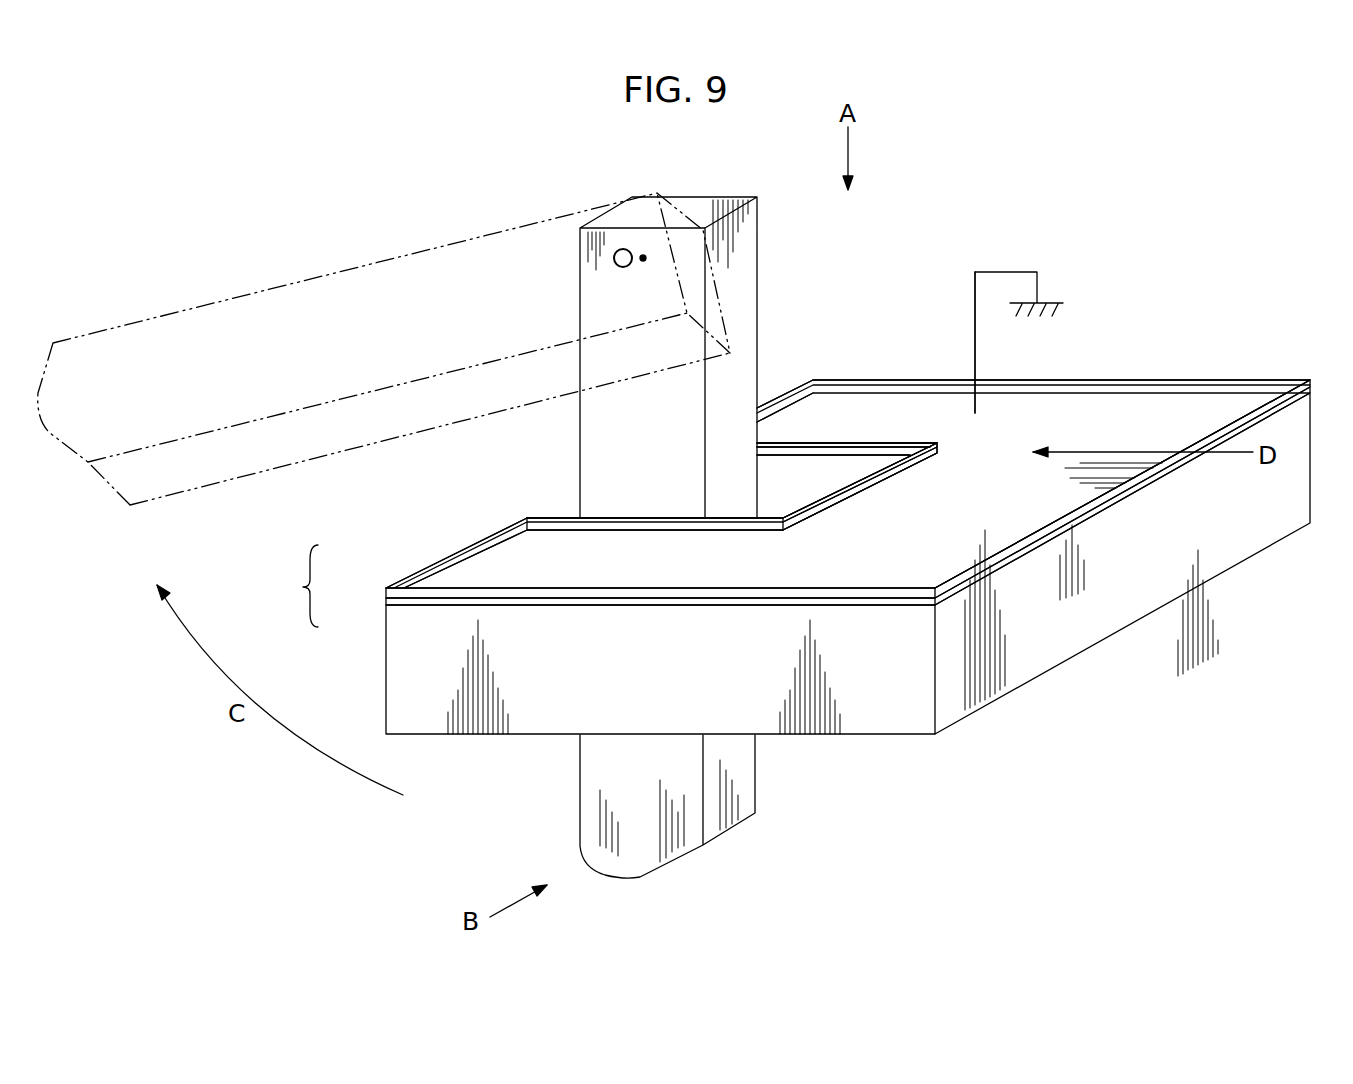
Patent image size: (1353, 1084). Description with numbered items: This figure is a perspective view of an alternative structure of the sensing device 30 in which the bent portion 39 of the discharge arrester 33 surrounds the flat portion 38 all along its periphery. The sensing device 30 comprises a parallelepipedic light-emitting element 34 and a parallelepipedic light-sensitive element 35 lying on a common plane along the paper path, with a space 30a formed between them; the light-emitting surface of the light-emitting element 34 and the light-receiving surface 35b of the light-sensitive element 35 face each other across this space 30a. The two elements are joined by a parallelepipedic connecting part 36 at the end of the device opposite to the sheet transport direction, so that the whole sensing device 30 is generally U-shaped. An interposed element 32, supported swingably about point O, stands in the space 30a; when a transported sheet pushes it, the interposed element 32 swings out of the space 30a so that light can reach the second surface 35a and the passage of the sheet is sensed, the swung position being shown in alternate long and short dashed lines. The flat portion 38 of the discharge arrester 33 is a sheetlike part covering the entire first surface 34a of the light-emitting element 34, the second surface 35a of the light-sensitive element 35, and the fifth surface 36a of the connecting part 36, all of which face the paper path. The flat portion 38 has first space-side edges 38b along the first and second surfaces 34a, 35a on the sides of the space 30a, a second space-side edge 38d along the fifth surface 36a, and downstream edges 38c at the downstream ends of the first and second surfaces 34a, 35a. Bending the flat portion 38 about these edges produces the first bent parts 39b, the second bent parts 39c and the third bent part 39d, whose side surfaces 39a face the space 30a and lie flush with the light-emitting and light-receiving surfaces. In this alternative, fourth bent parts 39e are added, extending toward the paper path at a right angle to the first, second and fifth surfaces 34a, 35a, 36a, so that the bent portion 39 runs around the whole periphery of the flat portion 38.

The sensing device 30 is at (1213, 257).
The space 30a is at (548, 497).
The interposed element 32 is at (288, 282).
The discharge arrester 33 is at (293, 586).
The light-emitting element 34 is at (495, 748).
The first surface 34a is at (483, 600).
The light-sensitive element 35 is at (883, 380).
The second surface 35a is at (850, 455).
The light-receiving surface 35b is at (875, 462).
The connecting part 36 is at (1140, 642).
The fifth surface 36a is at (1073, 522).
The flat portion 38 is at (420, 598).
The first space-side edges 38b is at (828, 455).
The downstream edges 38c is at (775, 415).
The second space-side edge 38d is at (883, 483).
The bent portion 39 is at (413, 579).
The side surfaces 39a is at (903, 450).
The first bent parts 39b is at (837, 452).
The second bent parts 39c is at (775, 397).
The third bent part 39d is at (1010, 473).
The fourth bent parts 39e is at (1180, 377).